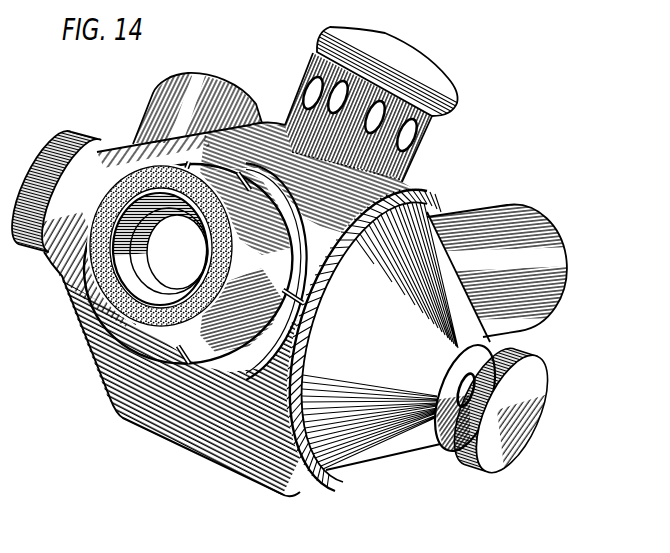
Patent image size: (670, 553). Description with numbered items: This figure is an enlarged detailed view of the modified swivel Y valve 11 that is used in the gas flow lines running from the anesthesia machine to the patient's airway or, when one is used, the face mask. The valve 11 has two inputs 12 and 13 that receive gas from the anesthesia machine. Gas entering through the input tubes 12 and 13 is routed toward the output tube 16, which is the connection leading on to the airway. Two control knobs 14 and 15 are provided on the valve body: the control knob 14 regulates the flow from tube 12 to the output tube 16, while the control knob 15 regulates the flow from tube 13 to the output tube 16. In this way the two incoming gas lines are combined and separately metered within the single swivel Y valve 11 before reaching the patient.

The swivel Y valve 11 is at (466, 135).
The input 12 is at (206, 82).
The input 13 is at (553, 247).
The control knob 14 is at (60, 129).
The control knob 15 is at (532, 404).
The output tube 16 is at (97, 294).